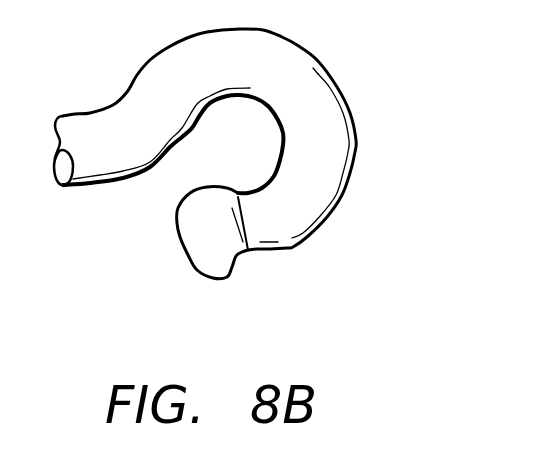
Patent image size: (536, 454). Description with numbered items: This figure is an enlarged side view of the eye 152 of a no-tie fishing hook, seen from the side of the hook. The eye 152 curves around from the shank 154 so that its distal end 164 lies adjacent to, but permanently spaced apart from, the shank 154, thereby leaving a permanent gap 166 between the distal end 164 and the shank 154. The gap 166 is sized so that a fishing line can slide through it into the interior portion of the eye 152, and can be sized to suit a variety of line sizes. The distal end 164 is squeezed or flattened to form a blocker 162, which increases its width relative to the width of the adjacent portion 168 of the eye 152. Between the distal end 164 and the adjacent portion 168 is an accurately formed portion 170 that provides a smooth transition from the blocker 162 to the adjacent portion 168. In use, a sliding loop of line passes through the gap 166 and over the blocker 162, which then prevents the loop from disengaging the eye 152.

The eye 152 is at (315, 59).
The shank 154 is at (88, 113).
The blocker 162 is at (216, 284).
The distal end 164 is at (181, 246).
The gap 166 is at (169, 191).
The adjacent portion 168 is at (305, 212).
The accurately formed portion 170 is at (247, 251).